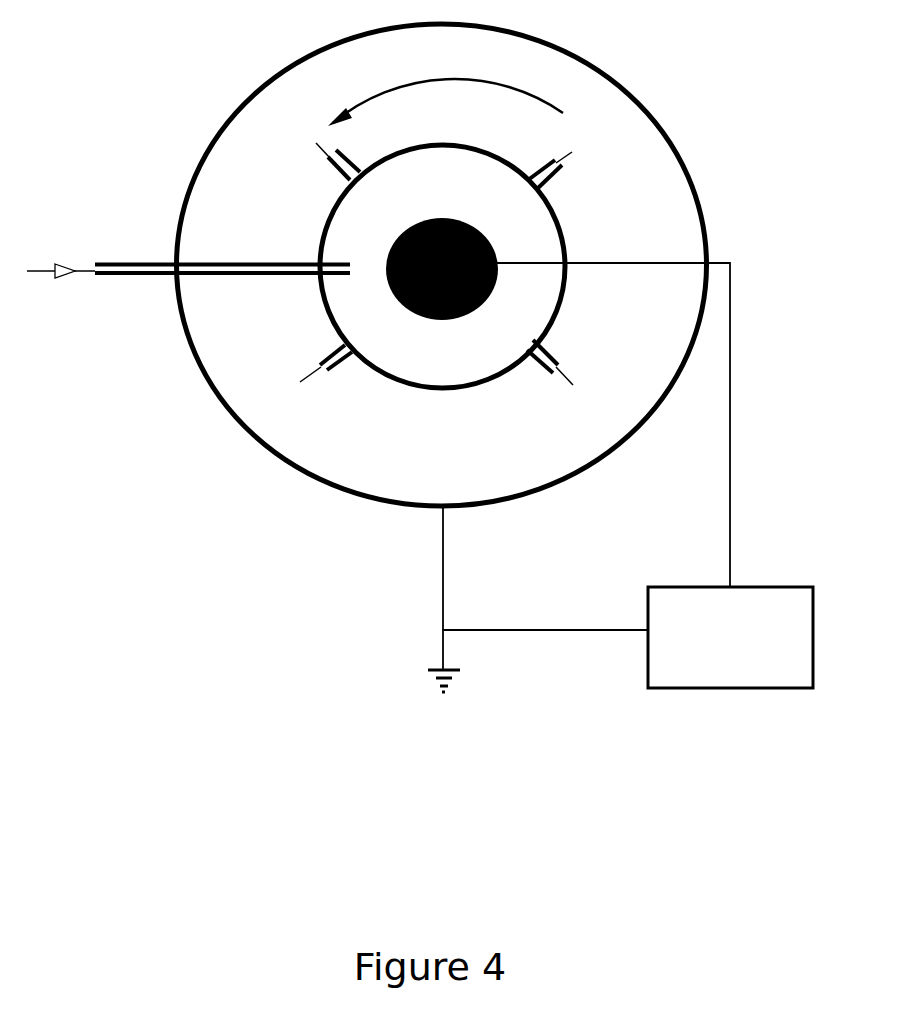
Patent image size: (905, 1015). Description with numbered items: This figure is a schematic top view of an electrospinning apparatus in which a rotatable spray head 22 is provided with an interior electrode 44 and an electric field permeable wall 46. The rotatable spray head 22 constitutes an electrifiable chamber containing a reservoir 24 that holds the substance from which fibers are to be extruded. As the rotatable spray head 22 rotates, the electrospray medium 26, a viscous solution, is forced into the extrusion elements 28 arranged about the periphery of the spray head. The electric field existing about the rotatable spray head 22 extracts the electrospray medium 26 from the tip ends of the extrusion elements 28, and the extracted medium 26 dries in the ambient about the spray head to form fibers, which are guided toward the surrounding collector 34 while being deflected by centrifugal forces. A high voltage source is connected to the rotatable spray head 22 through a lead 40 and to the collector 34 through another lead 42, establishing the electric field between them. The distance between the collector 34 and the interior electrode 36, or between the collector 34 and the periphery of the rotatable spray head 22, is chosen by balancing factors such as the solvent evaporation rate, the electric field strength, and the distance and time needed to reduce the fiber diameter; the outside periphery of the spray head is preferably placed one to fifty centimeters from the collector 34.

The rotatable spray head 22 is at (600, 202).
The reservoir 24 is at (393, 357).
The electrospray medium 26 is at (72, 273).
The extrusion elements 28 is at (347, 167).
The collector 34 is at (365, 507).
The interior electrode 36 is at (432, 317).
The lead 40 is at (733, 448).
The lead 42 is at (530, 625).
The interior electrode 44 is at (465, 315).
The electric field permeable wall 46 is at (448, 390).